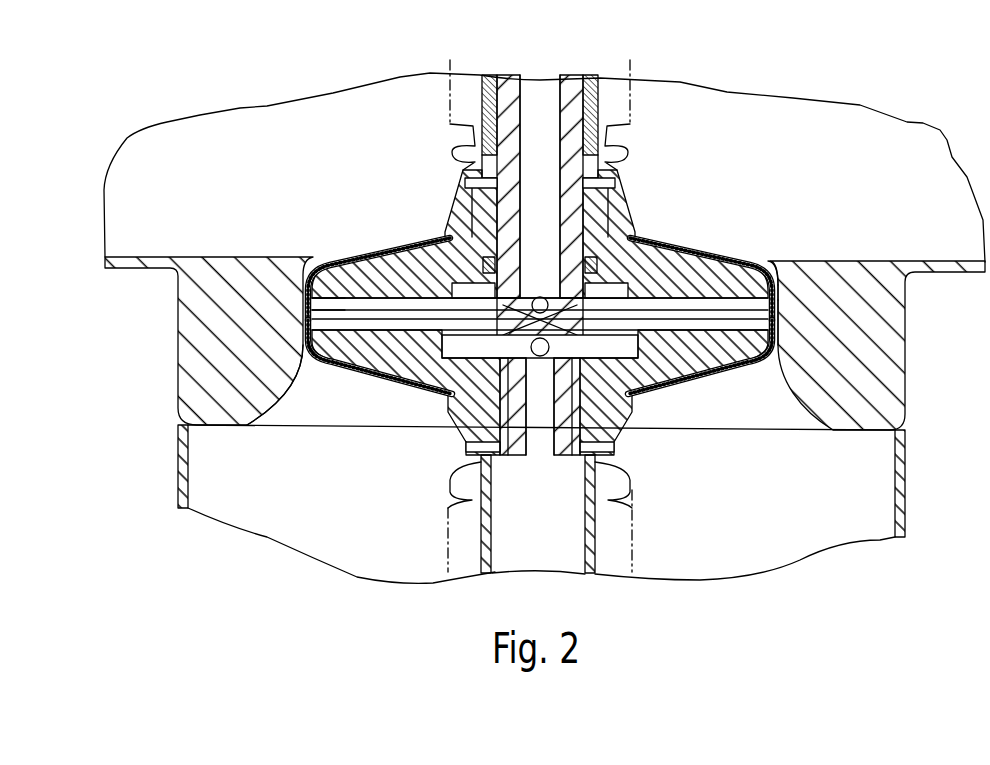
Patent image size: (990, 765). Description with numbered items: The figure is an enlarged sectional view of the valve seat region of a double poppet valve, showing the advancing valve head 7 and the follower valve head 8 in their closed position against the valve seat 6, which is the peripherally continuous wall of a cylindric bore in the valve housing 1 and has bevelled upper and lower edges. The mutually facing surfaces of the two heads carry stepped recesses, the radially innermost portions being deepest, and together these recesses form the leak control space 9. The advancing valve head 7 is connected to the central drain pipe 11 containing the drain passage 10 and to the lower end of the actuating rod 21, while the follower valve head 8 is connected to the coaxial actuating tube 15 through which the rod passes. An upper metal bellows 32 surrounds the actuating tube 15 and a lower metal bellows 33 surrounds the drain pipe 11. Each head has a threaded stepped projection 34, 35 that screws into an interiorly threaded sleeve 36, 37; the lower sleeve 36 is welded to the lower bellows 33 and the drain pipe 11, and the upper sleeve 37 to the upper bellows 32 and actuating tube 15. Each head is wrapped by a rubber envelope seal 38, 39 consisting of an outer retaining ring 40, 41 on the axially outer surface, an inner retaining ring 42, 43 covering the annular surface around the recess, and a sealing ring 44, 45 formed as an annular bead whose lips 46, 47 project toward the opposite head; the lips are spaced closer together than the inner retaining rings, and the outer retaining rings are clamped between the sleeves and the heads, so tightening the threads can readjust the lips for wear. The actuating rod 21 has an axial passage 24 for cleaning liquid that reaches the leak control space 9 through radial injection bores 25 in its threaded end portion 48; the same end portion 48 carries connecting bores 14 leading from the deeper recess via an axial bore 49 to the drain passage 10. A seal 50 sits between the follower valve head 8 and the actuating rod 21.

The valve housing 1 is at (195, 405).
The valve seat 6 is at (777, 275).
The advancing valve head 7 is at (697, 355).
The follower valve head 8 is at (705, 275).
The leak control space 9 is at (765, 318).
The drain passage 10 is at (553, 537).
The drain pipe 11 is at (447, 550).
The connecting bores 14 is at (600, 357).
The actuating tube 15 is at (490, 85).
The actuating rod 21 is at (572, 82).
The axial passage 24 is at (540, 90).
The injection bores 25 is at (541, 296).
The upper metal bellows 32 is at (452, 100).
The lower metal bellows 33 is at (445, 540).
The stepped projection 34 is at (492, 437).
The stepped projection 35 is at (483, 222).
The lower sleeve 36 is at (470, 440).
The upper sleeve 37 is at (470, 200).
The seal 38 is at (300, 354).
The seal 39 is at (790, 290).
The outer retaining ring 40 is at (377, 383).
The outer retaining ring 41 is at (683, 262).
The inner retaining ring 42 is at (302, 362).
The inner retaining ring 43 is at (313, 258).
The sealing ring 44 is at (778, 338).
The sealing ring 45 is at (780, 305).
The lip 46 is at (302, 318).
The lip 47 is at (303, 313).
The end portion 48 is at (520, 440).
The axial bore 49 is at (540, 437).
The seal 50 is at (600, 262).